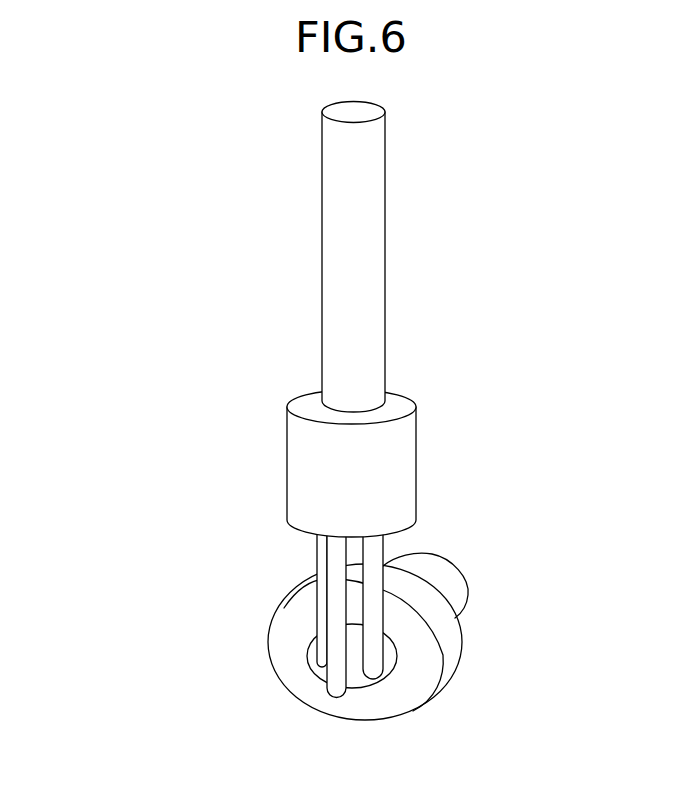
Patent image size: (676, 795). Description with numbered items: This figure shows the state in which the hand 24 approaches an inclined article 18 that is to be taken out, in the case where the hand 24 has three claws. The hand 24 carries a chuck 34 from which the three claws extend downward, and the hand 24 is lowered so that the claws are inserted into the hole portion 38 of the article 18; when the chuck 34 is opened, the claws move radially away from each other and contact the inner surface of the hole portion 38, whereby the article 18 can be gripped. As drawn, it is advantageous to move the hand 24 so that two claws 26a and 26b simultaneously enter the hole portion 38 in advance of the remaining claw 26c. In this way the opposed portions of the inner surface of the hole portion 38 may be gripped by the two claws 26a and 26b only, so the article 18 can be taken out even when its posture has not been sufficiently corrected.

The article 18 is at (447, 630).
The hand 24 is at (160, 495).
The claw 26a is at (372, 646).
The claw 26b is at (322, 560).
The claw 26c is at (337, 669).
The chuck 34 is at (308, 472).
The hole portion 38 is at (381, 689).